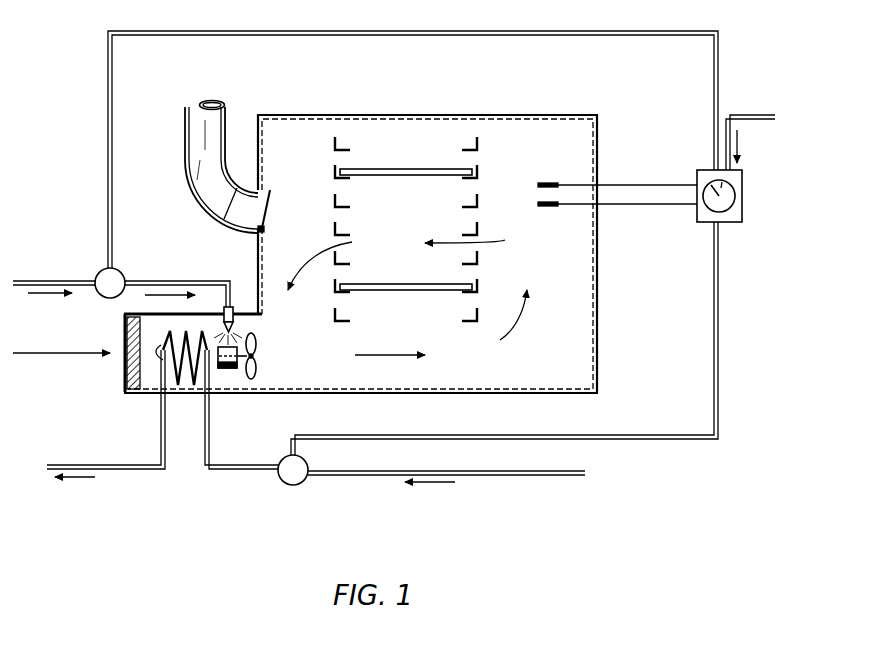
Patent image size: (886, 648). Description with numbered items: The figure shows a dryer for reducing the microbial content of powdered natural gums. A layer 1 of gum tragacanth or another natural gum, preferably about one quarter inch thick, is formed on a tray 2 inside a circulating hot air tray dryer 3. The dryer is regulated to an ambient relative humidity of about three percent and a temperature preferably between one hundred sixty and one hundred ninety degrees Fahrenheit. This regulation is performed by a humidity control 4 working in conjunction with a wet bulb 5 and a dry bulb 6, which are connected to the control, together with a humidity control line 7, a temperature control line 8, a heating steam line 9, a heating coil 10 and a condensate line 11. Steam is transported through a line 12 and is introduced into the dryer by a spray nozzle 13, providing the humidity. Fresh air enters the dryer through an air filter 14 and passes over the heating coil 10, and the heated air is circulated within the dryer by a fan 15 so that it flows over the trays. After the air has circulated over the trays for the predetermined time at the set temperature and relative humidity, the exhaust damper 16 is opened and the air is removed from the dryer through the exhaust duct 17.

The layer 1 is at (424, 169).
The tray 2 is at (478, 172).
The circulating hot air tray dryer 3 is at (598, 310).
The humidity control 4 is at (742, 222).
The wet bulb 5 is at (550, 183).
The dry bulb 6 is at (549, 207).
The humidity control line 7 is at (639, 33).
The temperature control line 8 is at (643, 434).
The heating steam line 9 is at (547, 471).
The heating coil 10 is at (175, 353).
The condensate line 11 is at (125, 465).
The line 12 is at (82, 288).
The spray nozzle 13 is at (233, 310).
The air filter 14 is at (126, 371).
The fan 15 is at (263, 347).
The exhaust damper 16 is at (271, 196).
The exhaust duct 17 is at (192, 105).